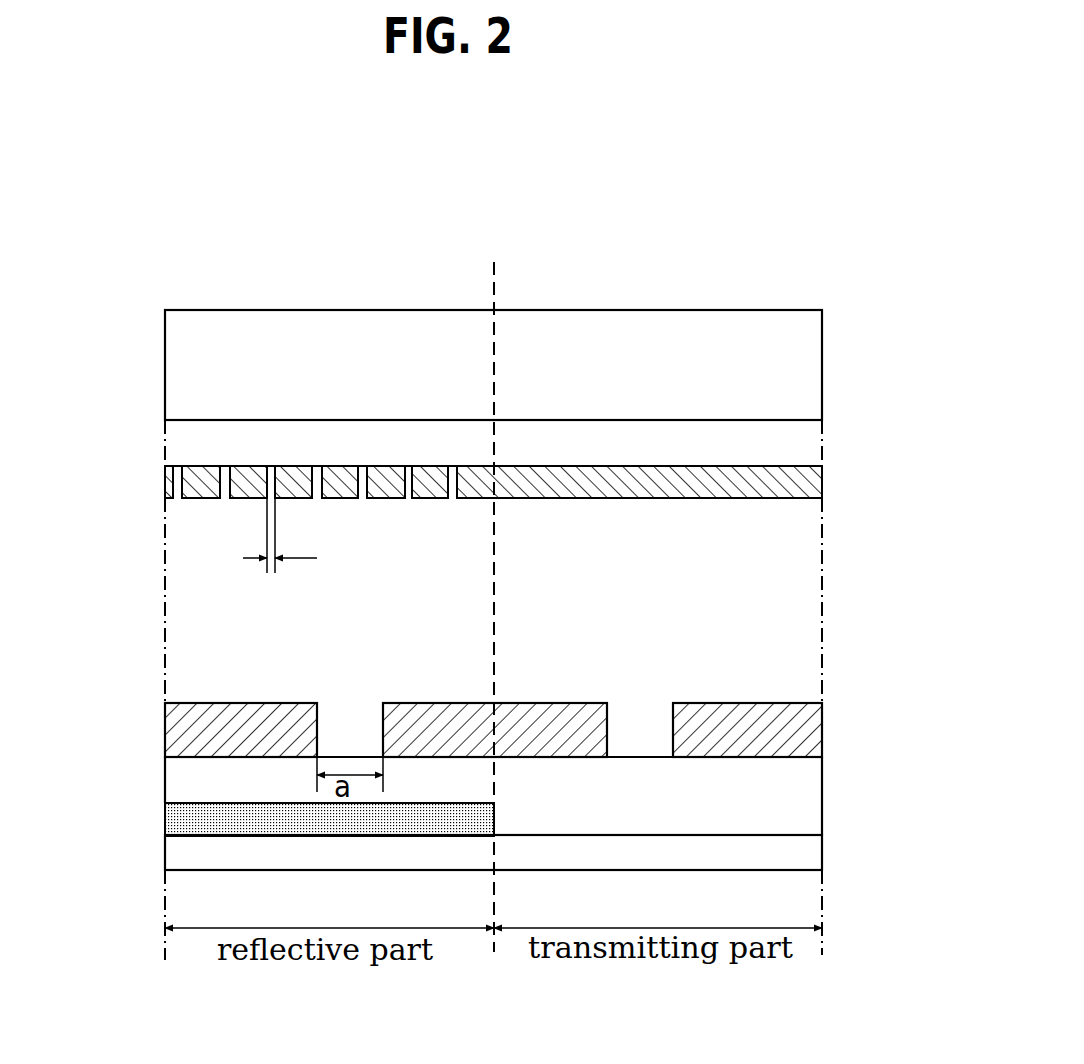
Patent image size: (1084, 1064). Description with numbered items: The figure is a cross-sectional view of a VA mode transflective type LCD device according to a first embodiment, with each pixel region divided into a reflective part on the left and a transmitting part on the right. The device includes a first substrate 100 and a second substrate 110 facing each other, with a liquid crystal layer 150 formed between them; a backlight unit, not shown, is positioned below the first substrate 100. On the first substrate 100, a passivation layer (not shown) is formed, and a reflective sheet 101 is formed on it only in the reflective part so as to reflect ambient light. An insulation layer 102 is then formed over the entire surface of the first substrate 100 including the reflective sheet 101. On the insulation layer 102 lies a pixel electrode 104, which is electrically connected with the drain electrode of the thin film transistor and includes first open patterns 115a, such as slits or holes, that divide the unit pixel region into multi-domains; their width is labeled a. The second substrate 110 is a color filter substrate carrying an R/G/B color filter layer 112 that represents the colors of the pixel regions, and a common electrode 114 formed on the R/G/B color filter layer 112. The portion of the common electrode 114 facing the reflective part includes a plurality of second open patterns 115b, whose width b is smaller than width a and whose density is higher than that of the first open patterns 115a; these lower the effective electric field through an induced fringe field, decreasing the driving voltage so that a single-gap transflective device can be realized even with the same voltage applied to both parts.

The first substrate 100 is at (808, 852).
The reflective sheet 101 is at (165, 822).
The insulation layer 102 is at (812, 797).
The pixel electrode 104 is at (812, 733).
The second substrate 110 is at (812, 357).
The R/G/B color filter layer 112 is at (812, 438).
The common electrode 114 is at (812, 480).
The first open pattern 115a is at (350, 702).
The second open pattern 115b is at (318, 504).
The liquid crystal layer 150 is at (812, 590).